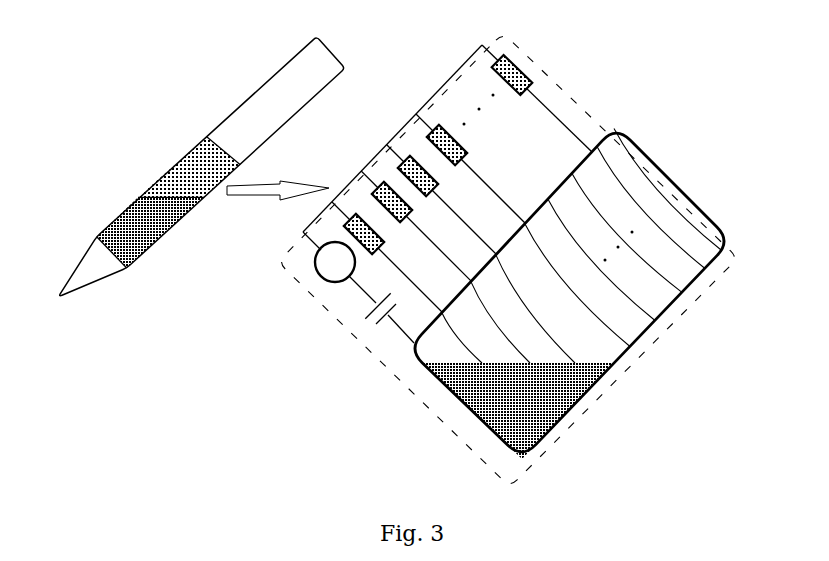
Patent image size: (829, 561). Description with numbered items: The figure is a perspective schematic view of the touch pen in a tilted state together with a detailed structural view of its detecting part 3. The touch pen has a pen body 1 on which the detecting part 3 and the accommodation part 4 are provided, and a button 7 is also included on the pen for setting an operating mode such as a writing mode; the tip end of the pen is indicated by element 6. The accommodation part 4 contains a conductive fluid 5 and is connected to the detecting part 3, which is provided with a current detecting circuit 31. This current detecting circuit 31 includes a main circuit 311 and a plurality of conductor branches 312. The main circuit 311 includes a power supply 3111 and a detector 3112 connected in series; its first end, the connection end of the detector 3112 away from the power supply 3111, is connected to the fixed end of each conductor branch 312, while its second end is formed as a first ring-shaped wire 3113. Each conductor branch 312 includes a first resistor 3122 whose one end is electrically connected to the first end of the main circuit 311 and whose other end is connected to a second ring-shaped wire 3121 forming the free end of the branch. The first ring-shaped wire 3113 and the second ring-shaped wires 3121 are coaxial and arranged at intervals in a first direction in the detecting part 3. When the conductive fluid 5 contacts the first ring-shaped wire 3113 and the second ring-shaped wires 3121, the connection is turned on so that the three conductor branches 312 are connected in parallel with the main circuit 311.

The pen body 1 is at (267, 78).
The detecting part 3 is at (223, 143).
The current detecting circuit 31 is at (187, 145).
The accommodation part 4 is at (137, 197).
The button 7 is at (122, 207).
The pen nib 6 is at (83, 253).
The conductive fluid 5 is at (153, 252).
The main circuit 311 is at (306, 244).
The power supply 3111 is at (366, 317).
The detector 3112 is at (318, 274).
The first ring-shaped wire 3113 is at (395, 373).
The conductor branch 312 is at (587, 113).
The second ring-shaped wire 3121 is at (680, 208).
The first resistor 3122 is at (519, 68).